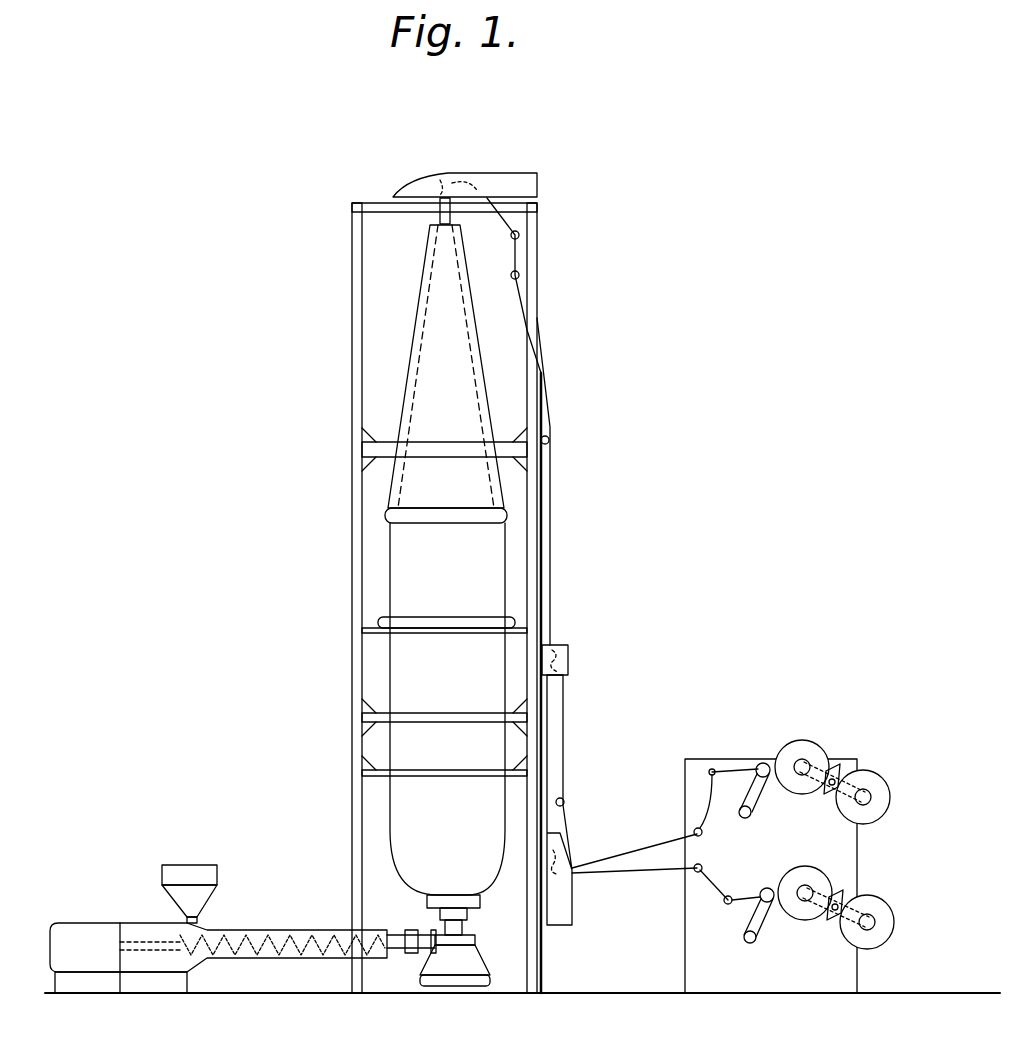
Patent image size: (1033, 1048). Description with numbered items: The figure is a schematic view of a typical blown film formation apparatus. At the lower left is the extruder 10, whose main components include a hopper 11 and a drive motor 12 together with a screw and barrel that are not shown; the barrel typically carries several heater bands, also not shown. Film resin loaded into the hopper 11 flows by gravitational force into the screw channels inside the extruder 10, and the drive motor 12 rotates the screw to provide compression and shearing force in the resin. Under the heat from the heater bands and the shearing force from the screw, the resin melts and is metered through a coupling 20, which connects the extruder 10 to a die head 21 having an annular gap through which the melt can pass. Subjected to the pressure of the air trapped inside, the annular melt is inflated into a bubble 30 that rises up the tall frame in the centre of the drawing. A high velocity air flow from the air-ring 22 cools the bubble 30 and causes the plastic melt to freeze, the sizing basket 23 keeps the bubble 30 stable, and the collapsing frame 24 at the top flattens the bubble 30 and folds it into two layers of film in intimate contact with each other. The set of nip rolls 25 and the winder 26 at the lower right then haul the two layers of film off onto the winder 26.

The extruder 10 is at (262, 930).
The hopper 11 is at (187, 865).
The drive motor 12 is at (77, 923).
The coupling 20 is at (412, 953).
The die head 21 is at (467, 937).
The air-ring 22 is at (432, 900).
The sizing basket 23 is at (483, 618).
The collapsing frame 24 is at (470, 345).
The set of nip rolls 25 is at (443, 187).
The winder 26 is at (818, 843).
The bubble 30 is at (505, 557).